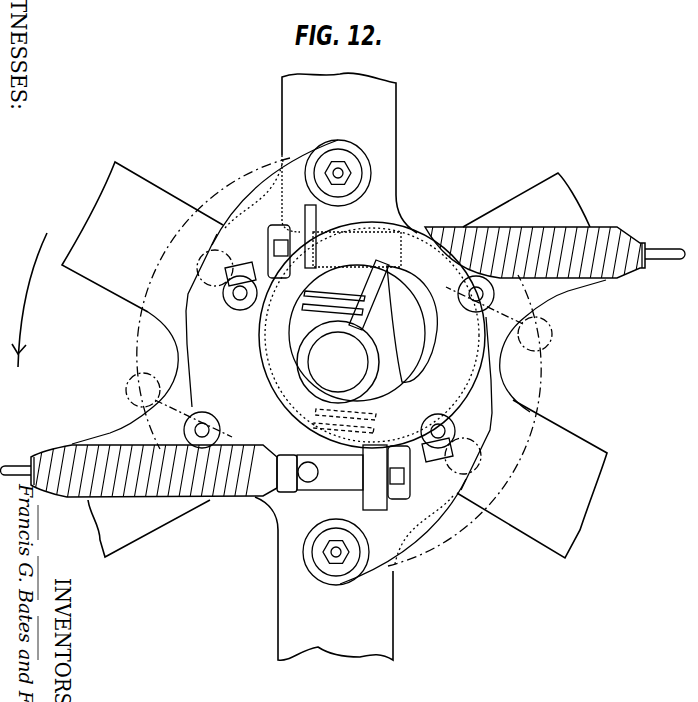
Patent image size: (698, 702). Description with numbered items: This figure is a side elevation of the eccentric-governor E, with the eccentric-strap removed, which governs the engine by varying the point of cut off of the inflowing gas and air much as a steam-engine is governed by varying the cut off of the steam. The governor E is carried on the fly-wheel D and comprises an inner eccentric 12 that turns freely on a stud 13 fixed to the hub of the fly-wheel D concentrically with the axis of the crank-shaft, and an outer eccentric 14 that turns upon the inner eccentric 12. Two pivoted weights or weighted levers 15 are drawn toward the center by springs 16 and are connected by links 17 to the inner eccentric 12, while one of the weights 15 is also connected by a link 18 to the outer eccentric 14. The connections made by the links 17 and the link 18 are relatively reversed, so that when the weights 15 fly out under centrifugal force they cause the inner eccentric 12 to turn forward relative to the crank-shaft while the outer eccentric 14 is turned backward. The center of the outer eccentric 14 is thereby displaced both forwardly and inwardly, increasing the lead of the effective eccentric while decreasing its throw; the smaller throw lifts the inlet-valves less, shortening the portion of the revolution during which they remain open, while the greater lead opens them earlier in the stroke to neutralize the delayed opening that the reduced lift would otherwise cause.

The inner eccentric 12 is at (422, 302).
The stud 13 is at (338, 362).
The outer eccentric 14 is at (372, 335).
The pivoted weights 15 is at (486, 443).
The springs 16 is at (343, 367).
The links 17 is at (328, 300).
The link 18 is at (414, 231).
The fly-wheel D is at (334, 360).
The governor E is at (339, 349).